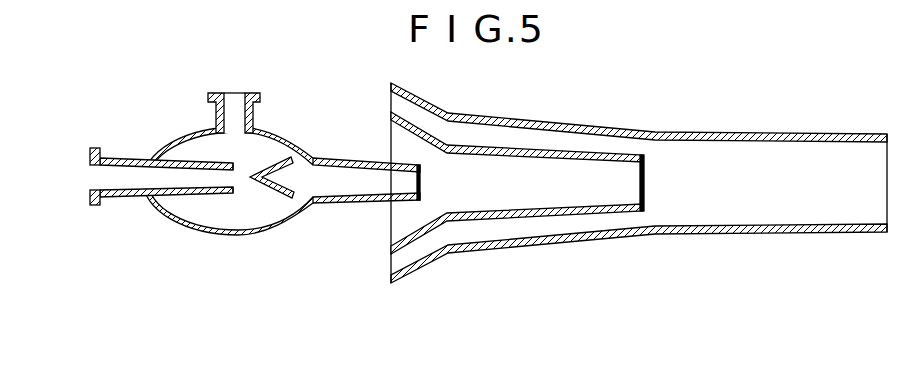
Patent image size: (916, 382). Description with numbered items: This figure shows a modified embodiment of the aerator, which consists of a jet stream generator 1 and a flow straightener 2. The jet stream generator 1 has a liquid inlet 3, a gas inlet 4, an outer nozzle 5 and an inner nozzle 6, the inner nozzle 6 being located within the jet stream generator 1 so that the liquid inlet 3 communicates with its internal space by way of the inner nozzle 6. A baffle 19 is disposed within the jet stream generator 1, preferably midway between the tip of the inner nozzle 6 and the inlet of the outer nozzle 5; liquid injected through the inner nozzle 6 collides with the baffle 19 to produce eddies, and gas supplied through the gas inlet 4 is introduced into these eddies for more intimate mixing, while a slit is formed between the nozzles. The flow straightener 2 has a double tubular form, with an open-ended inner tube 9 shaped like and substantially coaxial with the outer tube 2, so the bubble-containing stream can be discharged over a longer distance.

The jet stream generator 1 is at (245, 237).
The flow straightener 2 is at (697, 237).
The liquid inlet 3 is at (102, 178).
The gas inlet 4 is at (235, 102).
The outer nozzle 5 is at (407, 183).
The inner nozzle 6 is at (227, 187).
The inner tube 9 is at (574, 150).
The baffle 19 is at (284, 192).